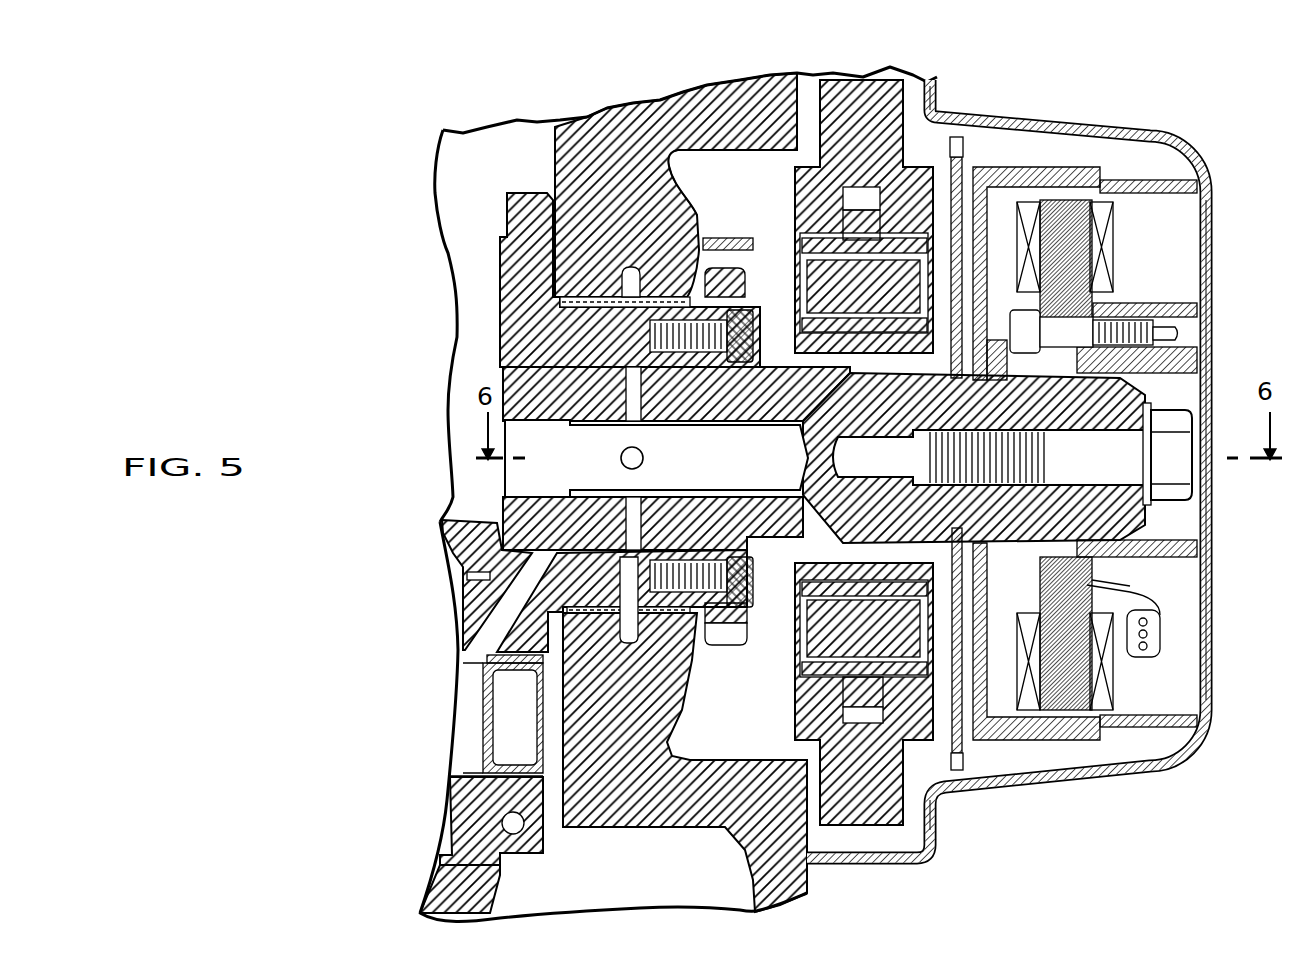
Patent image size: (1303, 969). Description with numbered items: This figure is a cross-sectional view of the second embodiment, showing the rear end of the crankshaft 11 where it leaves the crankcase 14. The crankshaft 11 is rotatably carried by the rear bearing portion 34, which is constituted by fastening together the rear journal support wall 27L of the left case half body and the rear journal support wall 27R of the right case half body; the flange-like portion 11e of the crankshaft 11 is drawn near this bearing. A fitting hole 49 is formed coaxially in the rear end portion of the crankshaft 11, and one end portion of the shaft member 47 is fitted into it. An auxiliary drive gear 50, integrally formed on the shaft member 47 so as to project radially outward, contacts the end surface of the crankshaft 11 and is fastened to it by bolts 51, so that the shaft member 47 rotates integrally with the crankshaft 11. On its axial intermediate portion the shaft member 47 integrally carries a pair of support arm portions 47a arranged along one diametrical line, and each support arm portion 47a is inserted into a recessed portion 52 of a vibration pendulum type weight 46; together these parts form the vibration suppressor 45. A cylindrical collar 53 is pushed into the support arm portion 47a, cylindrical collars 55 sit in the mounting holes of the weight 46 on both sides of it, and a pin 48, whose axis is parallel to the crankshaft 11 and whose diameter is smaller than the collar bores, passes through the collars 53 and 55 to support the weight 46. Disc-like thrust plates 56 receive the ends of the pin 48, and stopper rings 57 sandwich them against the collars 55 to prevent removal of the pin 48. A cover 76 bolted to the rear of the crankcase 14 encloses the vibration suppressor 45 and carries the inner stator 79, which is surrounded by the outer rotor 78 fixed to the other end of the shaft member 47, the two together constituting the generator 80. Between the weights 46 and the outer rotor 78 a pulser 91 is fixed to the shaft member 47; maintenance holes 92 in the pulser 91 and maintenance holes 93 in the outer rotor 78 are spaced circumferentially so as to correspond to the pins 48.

The crankshaft 11 is at (484, 293).
The housing flange 11e is at (687, 305).
The crankcase 14 is at (880, 815).
The rear journal support wall 27R is at (555, 152).
The rear journal support wall 27L is at (607, 815).
The rear bearing portion 34 is at (697, 214).
The vibration suppressor 45 is at (908, 135).
The vibration pendulum type weight 46 is at (870, 95).
The support arm portion 47a is at (828, 135).
The shaft member 47 is at (1085, 390).
The pin 48 is at (810, 300).
The fitting hole 49 is at (503, 336).
The auxiliary drive gear 50 is at (723, 633).
The bolt 51 is at (753, 340).
The recessed portion 52 is at (858, 215).
The cylindrical collar 53 is at (858, 245).
The cylindrical collar 55 is at (895, 250).
The thrust plate 56 is at (775, 650).
The stopper ring 57 is at (985, 375).
The cover 76 is at (1213, 284).
The outer rotor 78 is at (1043, 735).
The inner stator 79 is at (1113, 670).
The generator 80 is at (1127, 700).
The pulser 91 is at (950, 765).
The maintenance hole 92 is at (993, 740).
The maintenance hole 93 is at (985, 245).